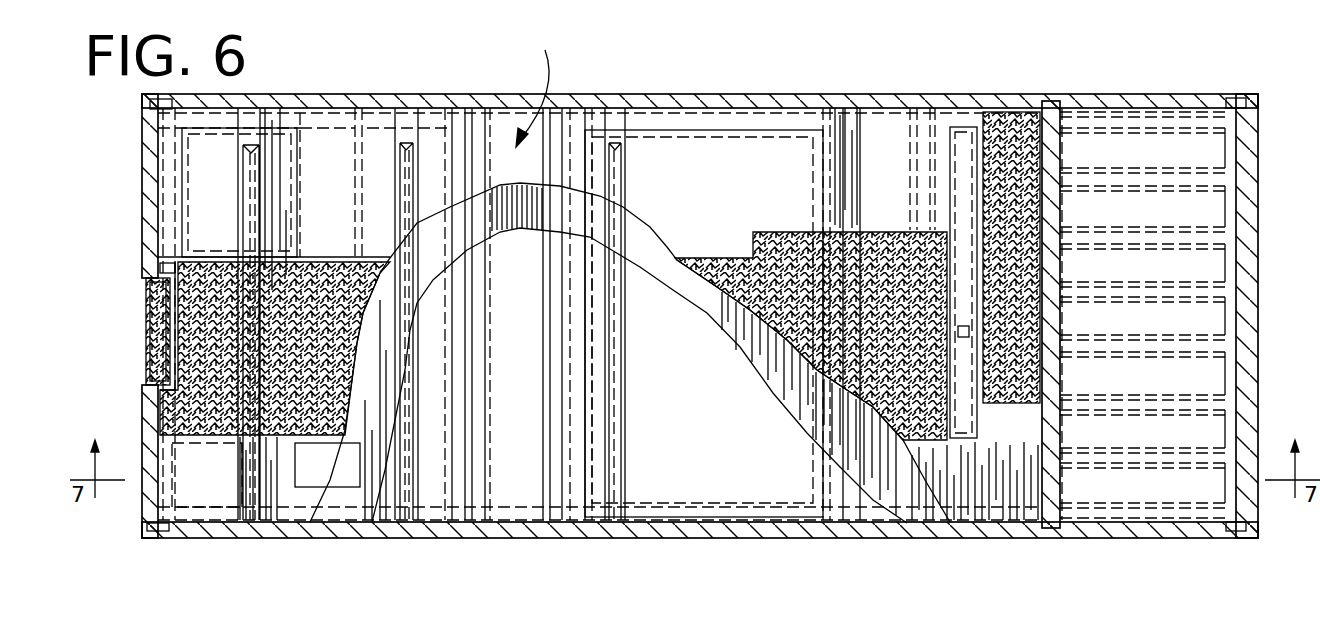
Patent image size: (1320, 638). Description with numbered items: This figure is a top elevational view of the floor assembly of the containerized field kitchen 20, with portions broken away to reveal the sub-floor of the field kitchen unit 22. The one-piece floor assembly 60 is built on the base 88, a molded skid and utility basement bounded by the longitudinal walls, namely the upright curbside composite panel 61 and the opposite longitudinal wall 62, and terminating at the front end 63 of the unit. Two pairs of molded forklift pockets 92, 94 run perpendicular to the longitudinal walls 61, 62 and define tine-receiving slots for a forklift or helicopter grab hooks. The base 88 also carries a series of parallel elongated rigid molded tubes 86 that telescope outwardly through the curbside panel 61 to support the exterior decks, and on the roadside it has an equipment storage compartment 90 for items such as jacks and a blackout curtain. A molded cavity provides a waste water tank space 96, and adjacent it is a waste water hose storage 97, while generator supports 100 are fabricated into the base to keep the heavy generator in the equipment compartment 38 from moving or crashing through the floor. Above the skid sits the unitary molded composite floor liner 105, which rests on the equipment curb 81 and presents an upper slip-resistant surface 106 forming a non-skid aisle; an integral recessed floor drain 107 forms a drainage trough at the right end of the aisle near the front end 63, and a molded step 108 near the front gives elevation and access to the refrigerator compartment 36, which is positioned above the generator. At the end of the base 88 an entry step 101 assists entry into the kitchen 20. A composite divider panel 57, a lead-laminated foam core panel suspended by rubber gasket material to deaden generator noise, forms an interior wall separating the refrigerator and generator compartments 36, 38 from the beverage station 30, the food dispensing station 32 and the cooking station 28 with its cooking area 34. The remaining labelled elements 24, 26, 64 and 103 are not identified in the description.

The containerized field kitchen 20 is at (1250, 95).
The field kitchen unit 22 is at (1230, 535).
The bottom left corner bracket 24 is at (140, 540).
The lower frame member 26 is at (345, 480).
The cooking station 28 is at (210, 150).
The beverage station 30 is at (278, 152).
The food dispensing station 32 is at (205, 480).
The cooking area 34 is at (672, 160).
The refrigerator compartment 36 is at (1185, 372).
The equipment compartment 38 is at (1187, 203).
The composite divider panel 57 is at (1055, 480).
The one-piece floor assembly 60 is at (528, 91).
The upright curbside composite panel 61 is at (645, 535).
The longitudinal wall 62 is at (750, 95).
The front end 63 is at (1250, 285).
The left side wall 64 is at (140, 200).
The equipment curb 81 is at (665, 290).
The molded tubes 86 is at (400, 520).
The base 88 is at (548, 480).
The equipment storage compartment 90 is at (333, 137).
The forklift pockets 92 is at (512, 490).
The forklift pockets 94 is at (865, 505).
The waste water tank space 96 is at (1025, 480).
The waste water hose storage 97 is at (1215, 318).
The generator supports 100 is at (1197, 168).
The entry step 101 is at (160, 312).
The top left corner bracket 103 is at (142, 102).
The floor liner 105 is at (780, 255).
The non-skid surface aisle 106 is at (210, 412).
The recessed floor drain 107 is at (967, 290).
The molded step 108 is at (1005, 118).